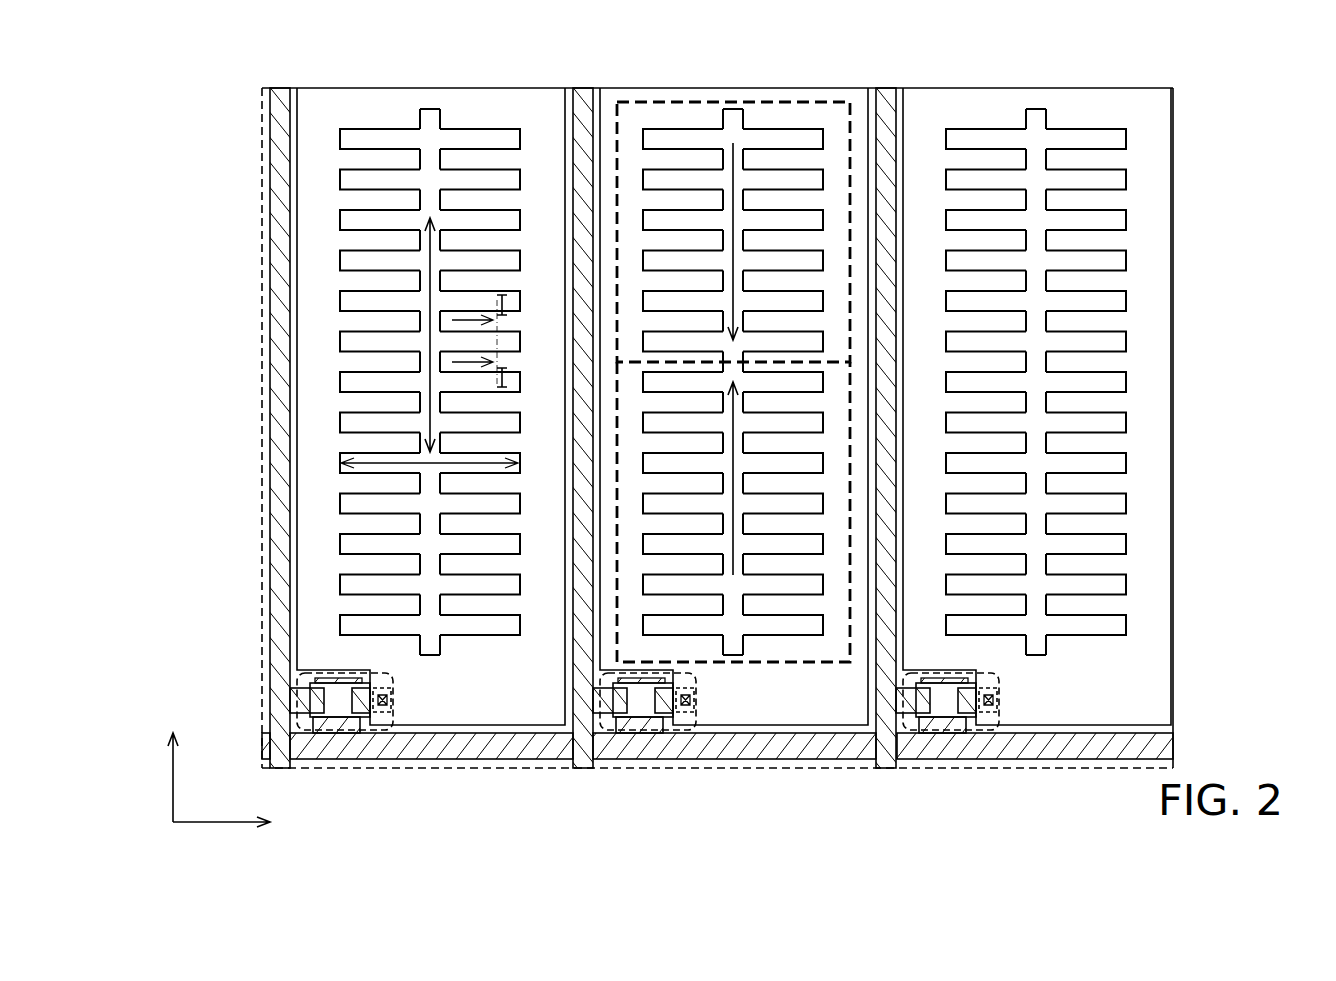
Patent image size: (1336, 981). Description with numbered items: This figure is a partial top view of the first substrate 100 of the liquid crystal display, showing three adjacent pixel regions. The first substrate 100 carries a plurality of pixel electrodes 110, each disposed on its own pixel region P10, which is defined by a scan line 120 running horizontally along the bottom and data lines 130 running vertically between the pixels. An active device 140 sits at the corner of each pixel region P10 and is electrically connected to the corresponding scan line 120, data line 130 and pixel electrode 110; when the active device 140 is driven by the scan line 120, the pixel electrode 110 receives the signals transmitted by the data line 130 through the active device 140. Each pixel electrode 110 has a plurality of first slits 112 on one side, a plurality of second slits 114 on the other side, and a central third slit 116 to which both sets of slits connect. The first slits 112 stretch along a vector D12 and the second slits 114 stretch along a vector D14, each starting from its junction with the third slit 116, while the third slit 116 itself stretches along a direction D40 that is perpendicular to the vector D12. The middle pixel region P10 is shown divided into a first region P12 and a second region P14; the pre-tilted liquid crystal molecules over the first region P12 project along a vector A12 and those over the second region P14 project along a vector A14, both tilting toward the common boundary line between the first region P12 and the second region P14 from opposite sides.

The first substrate 100 is at (703, 432).
The pixel electrode 110 is at (537, 123).
The first slits 112 is at (368, 135).
The second slits 114 is at (487, 140).
The third slit 116 is at (432, 148).
The scan line 120 is at (537, 748).
The data line 130 is at (277, 138).
The active device 140 is at (297, 702).
The pixel region P10 is at (455, 772).
The first region P12 is at (843, 114).
The second region P14 is at (758, 650).
The vector A12 is at (733, 183).
The vector A14 is at (733, 585).
The vector D12 is at (362, 463).
The vector D14 is at (475, 465).
The stretching direction D40 is at (430, 317).